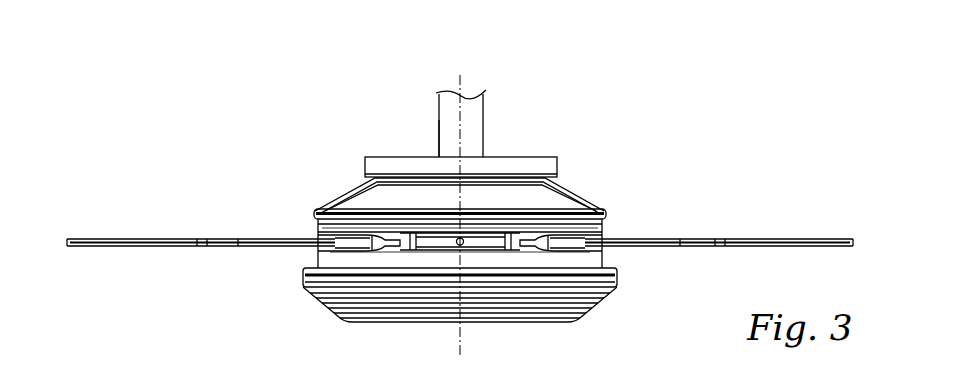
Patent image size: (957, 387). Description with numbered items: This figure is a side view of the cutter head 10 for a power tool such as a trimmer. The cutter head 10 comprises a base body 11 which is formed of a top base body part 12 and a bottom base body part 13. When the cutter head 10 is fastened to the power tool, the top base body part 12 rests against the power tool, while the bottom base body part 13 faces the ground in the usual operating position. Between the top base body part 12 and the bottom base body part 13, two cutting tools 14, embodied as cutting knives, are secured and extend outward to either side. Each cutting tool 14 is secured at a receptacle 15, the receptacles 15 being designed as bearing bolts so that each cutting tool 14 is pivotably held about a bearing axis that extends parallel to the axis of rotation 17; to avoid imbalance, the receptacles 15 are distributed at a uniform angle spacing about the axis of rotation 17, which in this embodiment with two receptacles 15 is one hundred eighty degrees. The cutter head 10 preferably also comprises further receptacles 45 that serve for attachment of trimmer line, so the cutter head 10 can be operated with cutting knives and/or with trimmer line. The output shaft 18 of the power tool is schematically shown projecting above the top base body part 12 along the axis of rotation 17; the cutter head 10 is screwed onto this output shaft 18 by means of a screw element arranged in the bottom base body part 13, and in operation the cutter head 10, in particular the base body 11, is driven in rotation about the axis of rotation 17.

The cutter head 10 is at (296, 118).
The base body 11 is at (579, 187).
The top base body part 12 is at (599, 205).
The bottom base body part 13 is at (590, 311).
The cutting tool 14 is at (100, 238).
The receptacle 15 is at (338, 221).
The axis of rotation 17 is at (463, 144).
The output shaft 18 is at (437, 125).
The receptacle for trimmer line 45 is at (469, 238).